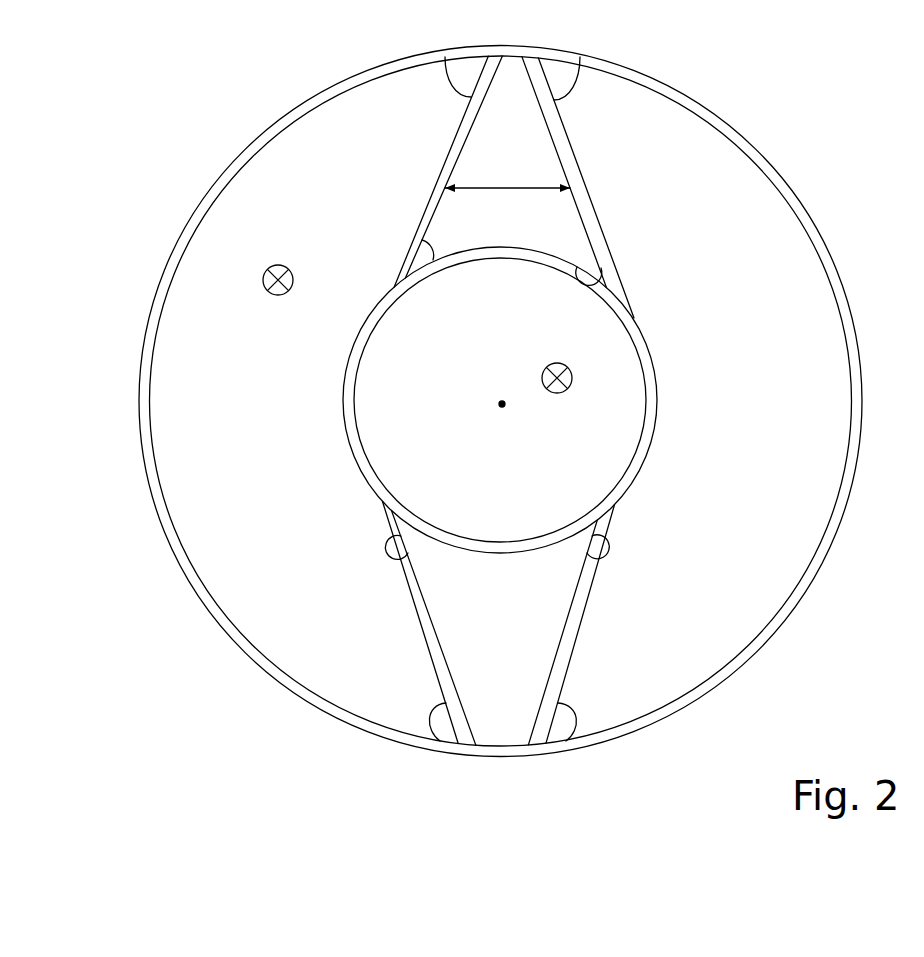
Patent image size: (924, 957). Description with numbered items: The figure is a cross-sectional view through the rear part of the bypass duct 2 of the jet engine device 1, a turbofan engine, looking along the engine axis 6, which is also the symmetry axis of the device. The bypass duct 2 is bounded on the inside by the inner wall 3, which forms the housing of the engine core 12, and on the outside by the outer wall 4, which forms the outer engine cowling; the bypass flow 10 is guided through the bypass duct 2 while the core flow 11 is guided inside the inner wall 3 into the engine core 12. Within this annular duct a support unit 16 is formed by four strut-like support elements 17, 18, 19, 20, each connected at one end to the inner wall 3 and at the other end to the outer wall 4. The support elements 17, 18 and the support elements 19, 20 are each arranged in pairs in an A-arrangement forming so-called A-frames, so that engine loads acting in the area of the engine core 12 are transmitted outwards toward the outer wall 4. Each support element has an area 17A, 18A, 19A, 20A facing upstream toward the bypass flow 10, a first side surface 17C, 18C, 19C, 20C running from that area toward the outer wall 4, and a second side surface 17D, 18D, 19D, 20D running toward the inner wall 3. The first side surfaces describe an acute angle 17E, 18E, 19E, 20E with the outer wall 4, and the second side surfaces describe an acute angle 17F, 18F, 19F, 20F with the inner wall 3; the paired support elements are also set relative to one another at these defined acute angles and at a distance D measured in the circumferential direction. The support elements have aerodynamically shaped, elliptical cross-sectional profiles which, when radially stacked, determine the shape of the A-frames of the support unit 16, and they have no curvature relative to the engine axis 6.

The jet engine device 1 is at (200, 114).
The bypass duct 2 is at (178, 305).
The inner wall 3 is at (343, 378).
The outer wall 4 is at (207, 185).
The engine axis 6 is at (498, 403).
The bypass flow 10 is at (280, 265).
The core flow 11 is at (572, 382).
The engine core 12 is at (541, 472).
The support unit 16 is at (603, 131).
The support element 17 is at (416, 145).
The area facing upstream 17A is at (425, 215).
The first side surface 17C is at (430, 237).
The second side surface 17D is at (474, 230).
The acute angle 17E is at (470, 62).
The acute angle 17F is at (420, 258).
The support element 18 is at (607, 162).
The area facing upstream 18A is at (600, 225).
The first side surface 18C is at (590, 202).
The second side surface 18D is at (595, 222).
The acute angle 18E is at (560, 58).
The acute angle 18F is at (610, 290).
The support element 19 is at (404, 659).
The area facing upstream 19A is at (433, 662).
The first side surface 19C is at (395, 567).
The second side surface 19D is at (442, 620).
The acute angle 19E is at (440, 742).
The acute angle 19F is at (405, 538).
The support element 20 is at (596, 660).
The area facing upstream 20A is at (570, 662).
The first side surface 20C is at (605, 560).
The second side surface 20D is at (577, 580).
The acute angle 20E is at (565, 742).
The acute angle 20F is at (600, 533).
The distance D is at (532, 185).